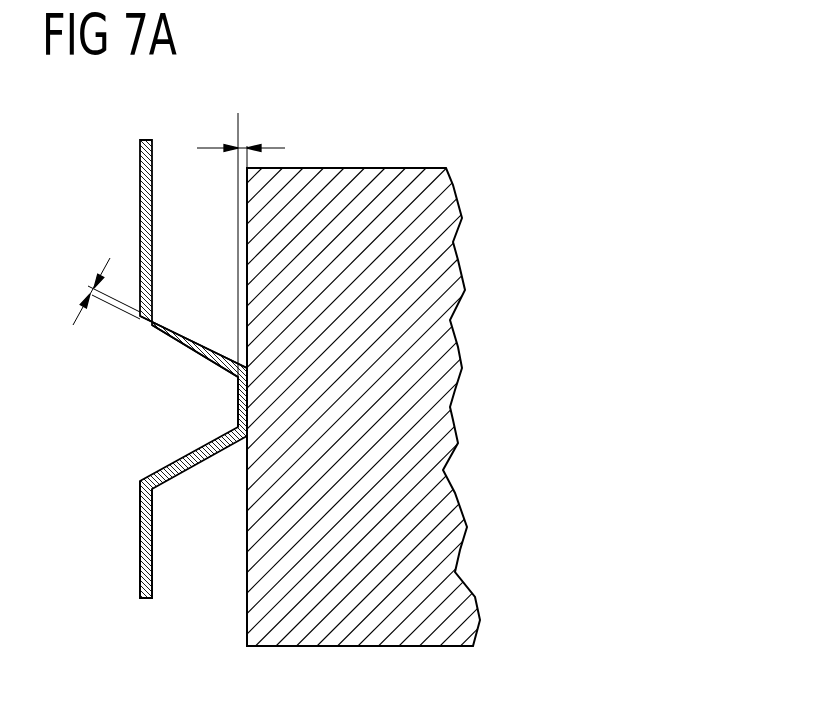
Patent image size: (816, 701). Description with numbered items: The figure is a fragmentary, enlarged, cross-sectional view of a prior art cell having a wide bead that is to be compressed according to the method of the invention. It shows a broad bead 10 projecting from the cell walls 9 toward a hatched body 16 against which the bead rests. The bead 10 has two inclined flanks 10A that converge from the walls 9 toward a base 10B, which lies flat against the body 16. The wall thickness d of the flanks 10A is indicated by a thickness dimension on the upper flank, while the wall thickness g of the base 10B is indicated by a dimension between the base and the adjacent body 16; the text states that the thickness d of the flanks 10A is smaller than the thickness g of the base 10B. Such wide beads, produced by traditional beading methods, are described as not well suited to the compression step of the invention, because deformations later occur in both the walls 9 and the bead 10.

The hatched body / wall 16 is at (353, 183).
The bead 10 is at (193, 423).
The flanks 10A is at (196, 338).
The base 10B is at (238, 396).
The walls 9 is at (153, 545).
The wall thickness of the base g is at (238, 147).
The wall thickness of the flanks d is at (92, 290).